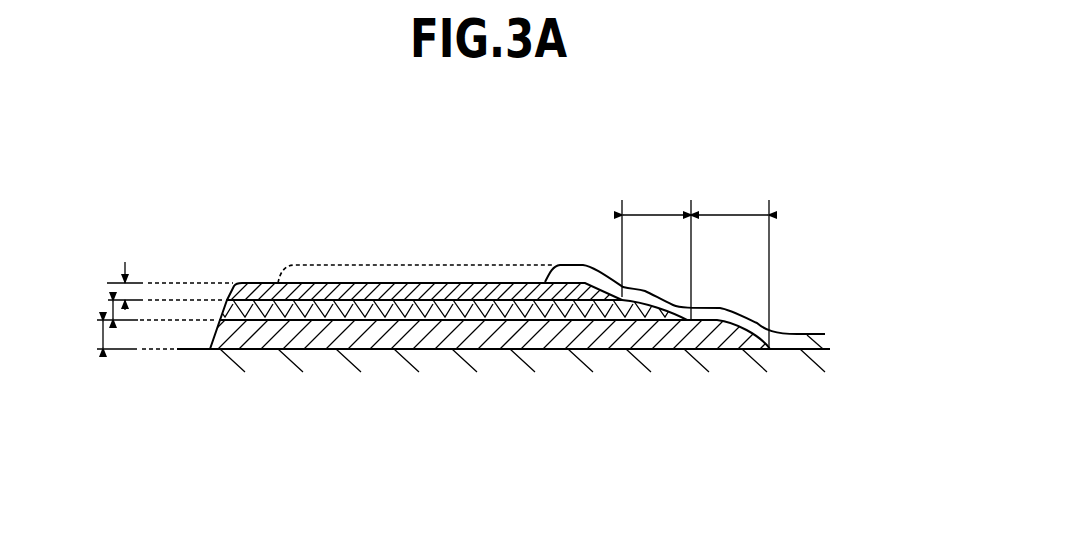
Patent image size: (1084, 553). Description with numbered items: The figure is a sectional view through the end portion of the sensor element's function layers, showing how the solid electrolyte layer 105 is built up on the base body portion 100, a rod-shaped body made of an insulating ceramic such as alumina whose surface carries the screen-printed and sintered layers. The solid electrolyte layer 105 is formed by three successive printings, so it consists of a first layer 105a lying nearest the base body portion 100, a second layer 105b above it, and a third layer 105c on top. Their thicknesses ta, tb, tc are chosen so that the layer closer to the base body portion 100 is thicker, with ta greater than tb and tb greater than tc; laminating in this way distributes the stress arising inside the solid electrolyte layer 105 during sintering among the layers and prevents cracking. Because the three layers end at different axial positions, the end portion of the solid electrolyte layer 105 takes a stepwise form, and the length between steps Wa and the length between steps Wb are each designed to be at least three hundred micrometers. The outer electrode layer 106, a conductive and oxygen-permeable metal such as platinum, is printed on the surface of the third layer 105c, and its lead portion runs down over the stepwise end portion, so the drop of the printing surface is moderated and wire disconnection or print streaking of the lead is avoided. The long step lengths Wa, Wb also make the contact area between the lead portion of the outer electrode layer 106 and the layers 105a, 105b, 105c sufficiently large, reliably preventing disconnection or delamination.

The base body portion 100 is at (803, 353).
The solid electrolyte layer 105 is at (492, 382).
The first layer of solid electrolyte layer 105a is at (527, 335).
The second layer of solid electrolyte layer 105b is at (455, 305).
The third layer of solid electrolyte layer 105c is at (585, 437).
The outer electrode layer 106 is at (573, 271).
The layer thickness of third layer tc is at (165, 279).
The layer thickness of second layer tb is at (149, 306).
The layer thickness of first layer ta is at (102, 335).
The length between steps Wb is at (656, 253).
The length between steps Wa is at (730, 267).